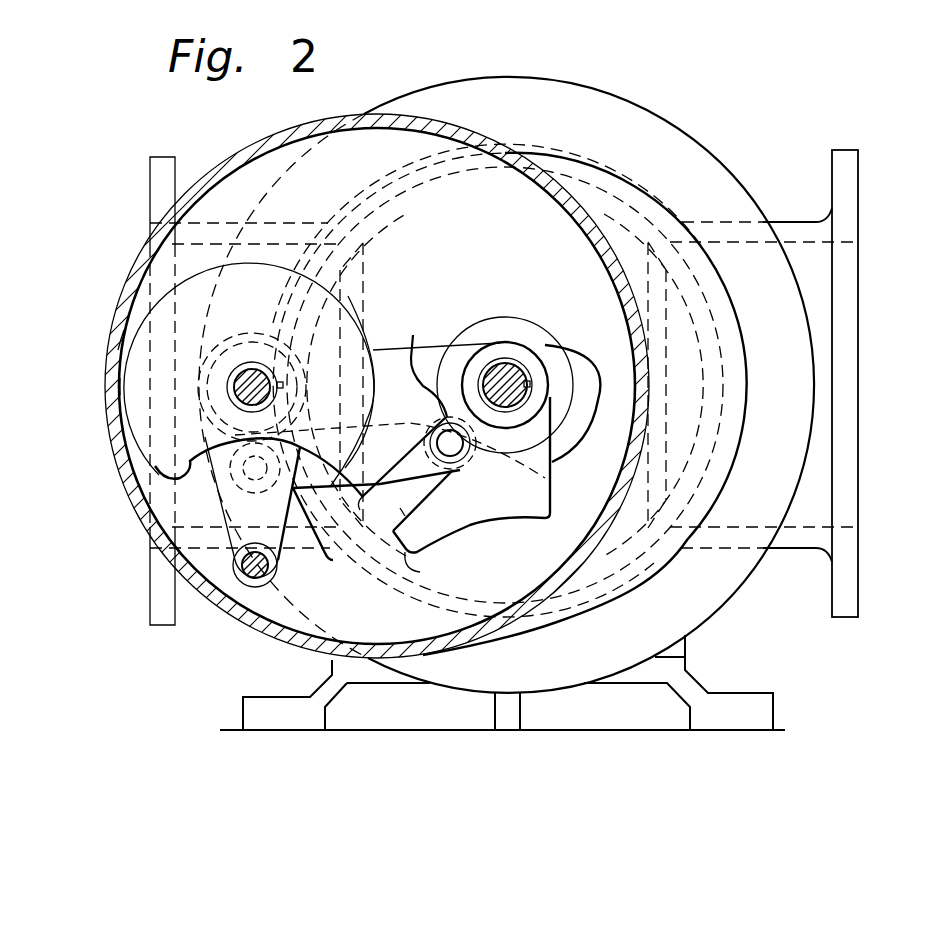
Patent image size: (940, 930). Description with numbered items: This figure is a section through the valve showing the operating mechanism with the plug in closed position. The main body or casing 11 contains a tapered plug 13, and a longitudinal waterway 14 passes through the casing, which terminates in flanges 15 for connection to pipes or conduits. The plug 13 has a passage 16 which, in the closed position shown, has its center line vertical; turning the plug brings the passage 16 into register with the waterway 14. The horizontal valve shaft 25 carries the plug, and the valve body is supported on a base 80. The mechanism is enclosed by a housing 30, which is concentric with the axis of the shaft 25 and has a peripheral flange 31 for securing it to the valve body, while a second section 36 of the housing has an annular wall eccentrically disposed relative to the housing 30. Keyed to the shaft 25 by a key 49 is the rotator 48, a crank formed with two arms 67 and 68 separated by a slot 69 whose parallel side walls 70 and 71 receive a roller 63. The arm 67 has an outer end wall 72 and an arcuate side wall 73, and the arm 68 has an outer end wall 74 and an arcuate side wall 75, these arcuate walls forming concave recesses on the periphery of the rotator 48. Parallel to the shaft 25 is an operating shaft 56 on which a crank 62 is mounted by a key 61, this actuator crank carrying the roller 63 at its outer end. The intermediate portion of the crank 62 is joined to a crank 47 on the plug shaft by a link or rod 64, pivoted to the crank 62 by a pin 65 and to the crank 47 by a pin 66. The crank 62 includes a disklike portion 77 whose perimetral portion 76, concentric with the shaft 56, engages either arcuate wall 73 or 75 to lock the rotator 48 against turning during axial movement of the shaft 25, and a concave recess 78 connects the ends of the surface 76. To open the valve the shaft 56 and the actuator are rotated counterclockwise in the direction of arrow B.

The main body or casing 11 is at (774, 220).
The tapered plug 13 is at (695, 326).
The longitudinal waterway or opening 14 is at (828, 248).
The flanges 15 is at (160, 181).
The passage 16 is at (652, 240).
The valve shaft 25 is at (508, 372).
The housing 30 is at (740, 420).
The peripheral flange 31 is at (596, 108).
The second section of the housing 36 is at (283, 140).
The crank 47 is at (390, 466).
The second crank (rotator) 48 is at (552, 478).
The key 49 is at (532, 385).
The operating shaft 56 is at (252, 370).
The key 61 is at (285, 385).
The crank 62 is at (252, 507).
The roller 63 is at (272, 582).
The link or rod 64 is at (416, 463).
The pin 65 is at (245, 477).
The pin 66 is at (452, 452).
The arm 67 is at (342, 465).
The arm 68 is at (423, 501).
The slot 69 is at (422, 363).
The side wall 70 is at (380, 490).
The side wall 71 is at (405, 512).
The outer end wall 72 is at (313, 535).
The arcuate side wall 73 is at (379, 385).
The outer end wall 74 is at (418, 572).
The arcuate side wall 75 is at (498, 520).
The perimetral portion 76 is at (135, 385).
The disklike portion 77 is at (140, 366).
The concave recess 78 is at (178, 480).
The base 80 is at (752, 703).
The arrow B is at (222, 282).